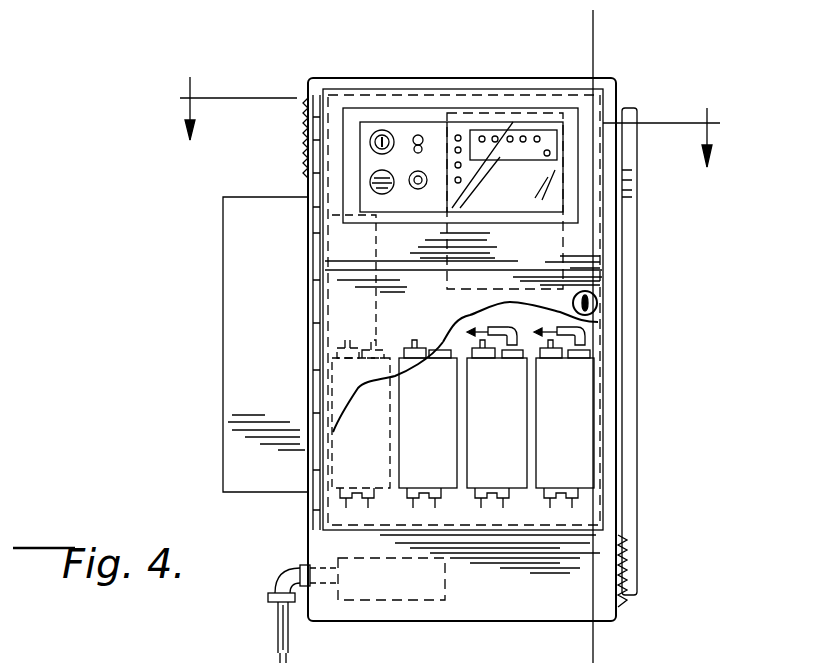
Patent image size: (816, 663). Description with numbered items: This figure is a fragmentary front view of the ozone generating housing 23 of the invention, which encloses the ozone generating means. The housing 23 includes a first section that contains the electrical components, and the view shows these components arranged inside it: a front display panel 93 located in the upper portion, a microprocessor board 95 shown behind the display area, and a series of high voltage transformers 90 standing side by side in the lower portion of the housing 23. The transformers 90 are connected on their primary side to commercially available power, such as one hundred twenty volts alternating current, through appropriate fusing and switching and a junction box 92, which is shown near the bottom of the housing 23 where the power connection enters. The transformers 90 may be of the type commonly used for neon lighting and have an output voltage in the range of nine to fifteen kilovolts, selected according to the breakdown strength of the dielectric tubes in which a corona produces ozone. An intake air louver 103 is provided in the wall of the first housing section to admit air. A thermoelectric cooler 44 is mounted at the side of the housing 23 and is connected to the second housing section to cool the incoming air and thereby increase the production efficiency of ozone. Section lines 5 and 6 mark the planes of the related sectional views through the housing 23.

The section line 5- 5 is at (545, 23).
The section line 6- 6 is at (450, 106).
The housing 23 is at (352, 70).
The thermoelectric cooler 44 is at (233, 323).
The high voltage transformers 90 is at (333, 427).
The junction box 92 is at (368, 590).
The front display panel 93 is at (370, 153).
The microprocessor board 95 is at (567, 250).
The intake air louver 103 is at (622, 567).